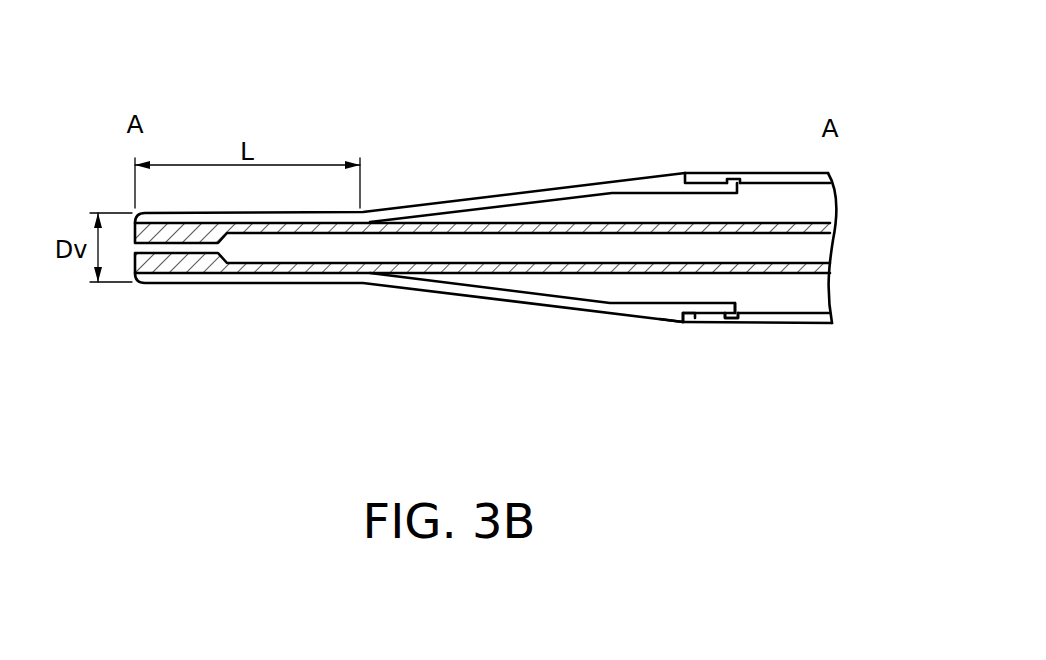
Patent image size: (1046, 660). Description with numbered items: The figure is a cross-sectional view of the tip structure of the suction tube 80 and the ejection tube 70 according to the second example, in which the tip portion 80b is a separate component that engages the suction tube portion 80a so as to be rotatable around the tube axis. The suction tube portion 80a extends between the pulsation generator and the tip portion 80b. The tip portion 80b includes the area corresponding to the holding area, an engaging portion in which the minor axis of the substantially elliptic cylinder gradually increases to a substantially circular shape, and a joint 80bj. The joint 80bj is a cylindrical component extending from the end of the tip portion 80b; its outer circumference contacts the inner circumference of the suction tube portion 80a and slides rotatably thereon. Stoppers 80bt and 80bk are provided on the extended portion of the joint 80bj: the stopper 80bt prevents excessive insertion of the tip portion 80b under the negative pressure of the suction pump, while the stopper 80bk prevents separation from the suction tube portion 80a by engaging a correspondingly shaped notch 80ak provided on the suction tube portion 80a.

The inner tube 70 is at (292, 273).
The suction tube 80 is at (793, 103).
The suction tube portion 80a is at (767, 172).
The tip portion 80b is at (573, 185).
The stopper 80bt is at (677, 323).
The joint 80bj is at (698, 310).
The stopper 80bk is at (727, 323).
The notch 80ak is at (740, 323).